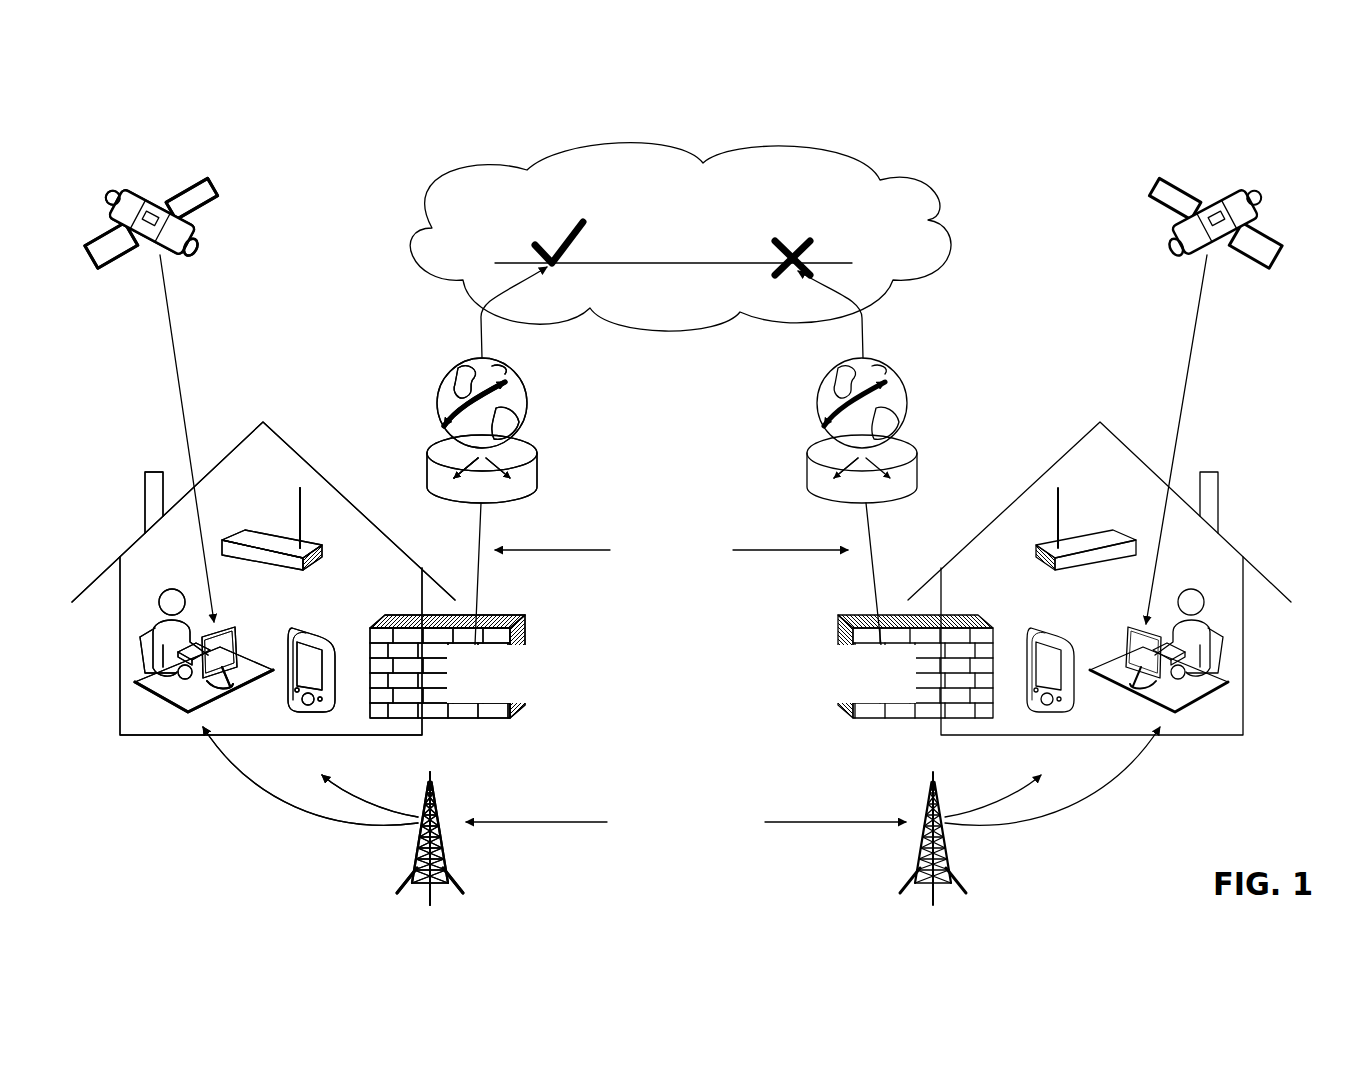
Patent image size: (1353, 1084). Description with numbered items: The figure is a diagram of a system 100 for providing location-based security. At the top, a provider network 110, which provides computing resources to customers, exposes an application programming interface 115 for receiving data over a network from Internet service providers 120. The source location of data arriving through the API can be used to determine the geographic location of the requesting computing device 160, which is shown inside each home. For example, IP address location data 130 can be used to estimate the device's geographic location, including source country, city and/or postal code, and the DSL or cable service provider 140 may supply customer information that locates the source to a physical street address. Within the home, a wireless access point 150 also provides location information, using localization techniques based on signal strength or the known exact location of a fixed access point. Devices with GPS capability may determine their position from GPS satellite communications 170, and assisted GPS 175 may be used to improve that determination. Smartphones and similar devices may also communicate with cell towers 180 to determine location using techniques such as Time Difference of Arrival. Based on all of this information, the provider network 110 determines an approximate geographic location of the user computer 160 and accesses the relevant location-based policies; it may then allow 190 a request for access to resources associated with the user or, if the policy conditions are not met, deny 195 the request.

The system 100 is at (331, 124).
The provider network 110 is at (782, 206).
The application programming interface 115 is at (708, 262).
The Internet service provider 120 is at (458, 366).
The IP address location data 130 is at (533, 662).
The DSL or cable service provider 140 is at (666, 530).
The wireless access point 150 is at (266, 536).
The requesting computing device 160 is at (242, 644).
The GPS satellite communications 170 is at (157, 196).
The assisted GPS 175 is at (330, 861).
The cell tower 180 is at (438, 803).
The allow 190 is at (543, 244).
The deny 195 is at (805, 240).